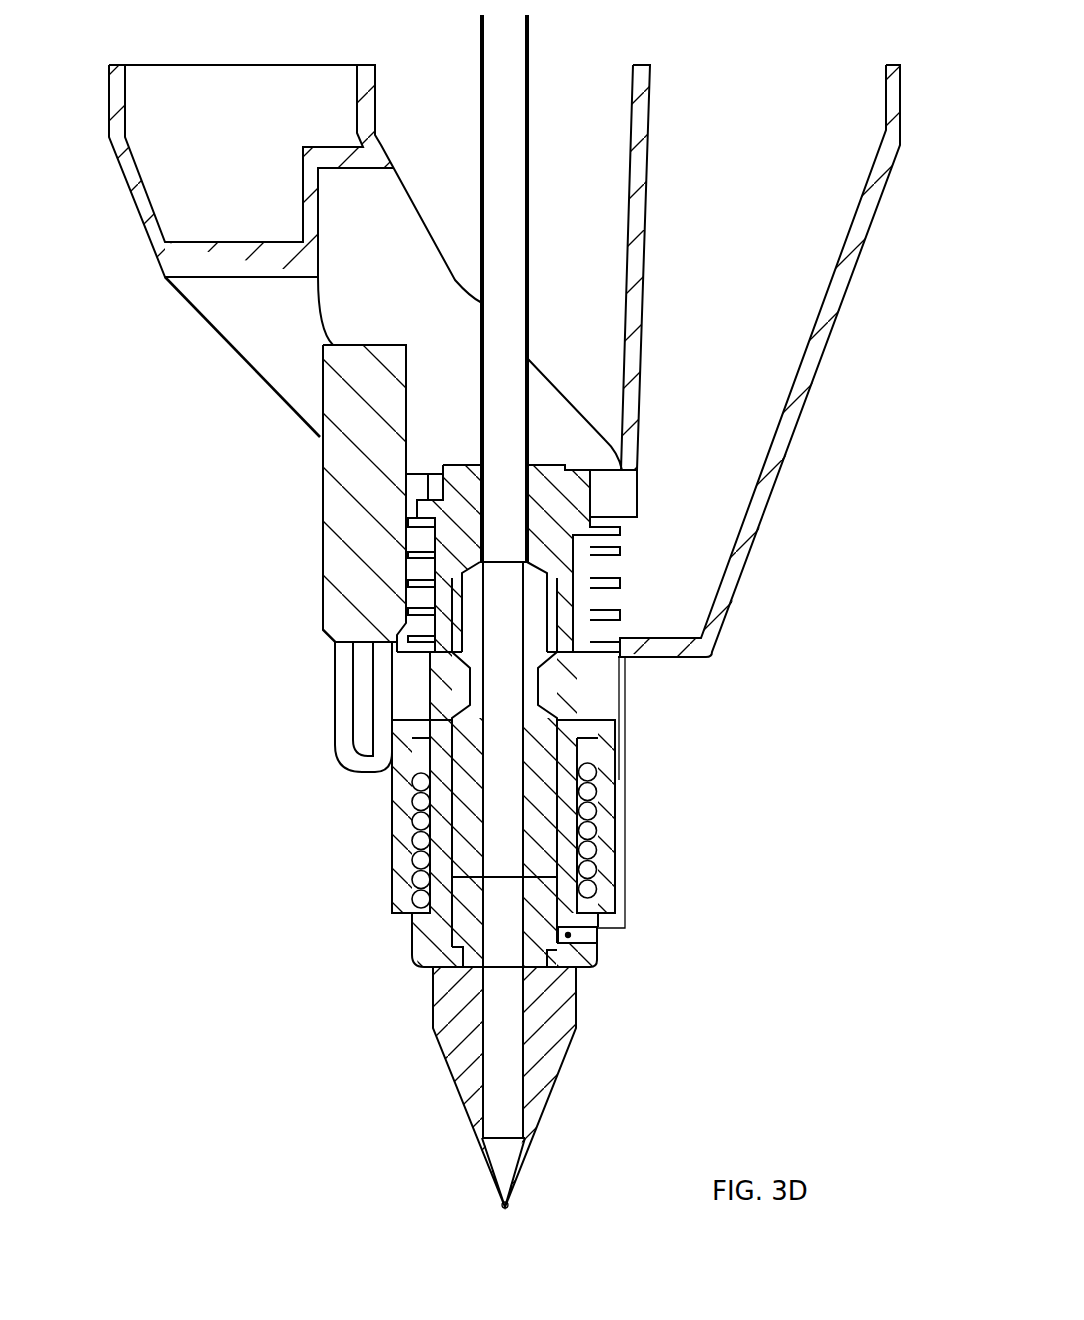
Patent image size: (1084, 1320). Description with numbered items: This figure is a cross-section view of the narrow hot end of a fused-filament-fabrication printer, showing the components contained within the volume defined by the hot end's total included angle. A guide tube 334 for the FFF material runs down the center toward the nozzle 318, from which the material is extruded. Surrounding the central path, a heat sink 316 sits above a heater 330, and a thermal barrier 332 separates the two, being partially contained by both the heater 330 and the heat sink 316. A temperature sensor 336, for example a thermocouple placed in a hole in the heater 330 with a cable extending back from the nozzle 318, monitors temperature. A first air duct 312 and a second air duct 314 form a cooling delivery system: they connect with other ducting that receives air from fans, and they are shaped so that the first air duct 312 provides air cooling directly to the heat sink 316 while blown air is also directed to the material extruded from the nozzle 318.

The first air duct 312 is at (778, 443).
The second air duct 314 is at (220, 334).
The heat sink 316 is at (565, 618).
The nozzle 318 is at (560, 1058).
The heater 330 is at (400, 838).
The thermal barrier 332 is at (530, 677).
The guide tube 334 is at (528, 240).
The temperature sensor 336 is at (568, 935).